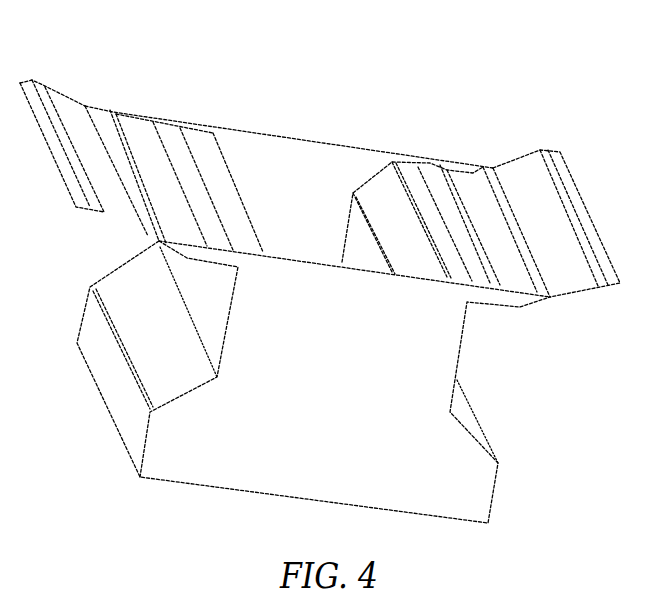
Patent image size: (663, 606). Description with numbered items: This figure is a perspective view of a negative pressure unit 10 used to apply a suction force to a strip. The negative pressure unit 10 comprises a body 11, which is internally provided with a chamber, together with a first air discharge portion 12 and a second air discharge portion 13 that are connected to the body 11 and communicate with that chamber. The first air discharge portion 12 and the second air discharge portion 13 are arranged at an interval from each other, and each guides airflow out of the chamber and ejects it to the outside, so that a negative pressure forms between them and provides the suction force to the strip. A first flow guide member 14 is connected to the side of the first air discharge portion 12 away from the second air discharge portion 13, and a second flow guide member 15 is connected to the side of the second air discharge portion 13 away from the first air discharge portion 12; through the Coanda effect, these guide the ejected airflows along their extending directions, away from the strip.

The negative pressure unit 10 is at (327, 36).
The body 11 is at (197, 468).
The first air discharge portion 12 is at (142, 120).
The second air discharge portion 13 is at (466, 185).
The first flow guide member 14 is at (100, 207).
The second flow guide member 15 is at (577, 290).